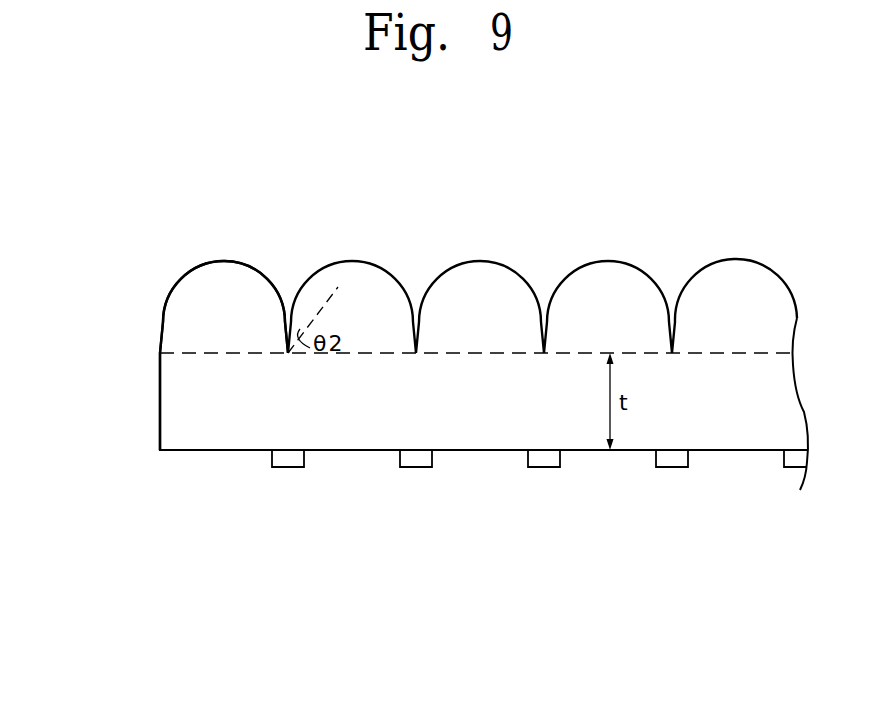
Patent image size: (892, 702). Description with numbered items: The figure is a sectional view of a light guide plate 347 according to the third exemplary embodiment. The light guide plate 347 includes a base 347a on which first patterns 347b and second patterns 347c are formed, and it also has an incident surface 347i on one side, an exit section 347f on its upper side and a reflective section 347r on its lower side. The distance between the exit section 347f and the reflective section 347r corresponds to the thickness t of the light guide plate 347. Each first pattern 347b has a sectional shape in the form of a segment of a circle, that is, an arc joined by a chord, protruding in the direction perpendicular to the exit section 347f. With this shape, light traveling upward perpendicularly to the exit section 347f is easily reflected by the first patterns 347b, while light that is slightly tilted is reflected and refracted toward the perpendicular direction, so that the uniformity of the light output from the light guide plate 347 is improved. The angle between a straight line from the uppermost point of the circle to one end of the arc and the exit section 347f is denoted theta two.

The light guide plate 347 is at (213, 263).
The base 347a is at (171, 389).
The first pattern 347b is at (200, 321).
The second pattern 347c is at (285, 460).
The exit section 347f is at (386, 353).
The incident surface 347i is at (160, 425).
The reflective section 347r is at (484, 452).